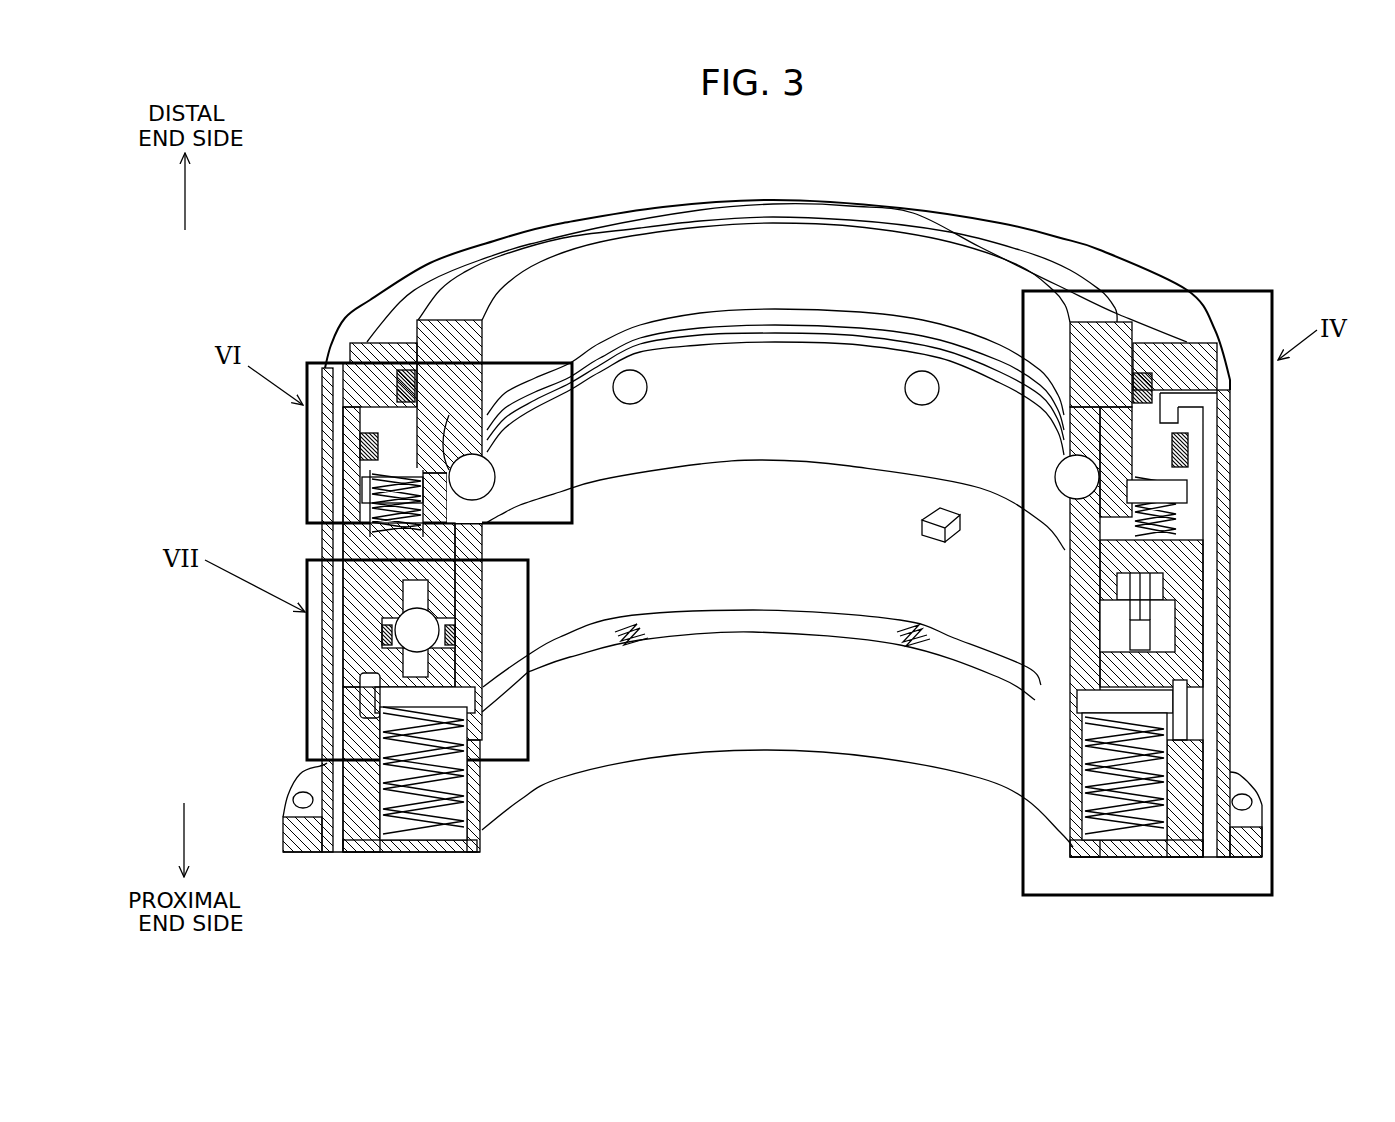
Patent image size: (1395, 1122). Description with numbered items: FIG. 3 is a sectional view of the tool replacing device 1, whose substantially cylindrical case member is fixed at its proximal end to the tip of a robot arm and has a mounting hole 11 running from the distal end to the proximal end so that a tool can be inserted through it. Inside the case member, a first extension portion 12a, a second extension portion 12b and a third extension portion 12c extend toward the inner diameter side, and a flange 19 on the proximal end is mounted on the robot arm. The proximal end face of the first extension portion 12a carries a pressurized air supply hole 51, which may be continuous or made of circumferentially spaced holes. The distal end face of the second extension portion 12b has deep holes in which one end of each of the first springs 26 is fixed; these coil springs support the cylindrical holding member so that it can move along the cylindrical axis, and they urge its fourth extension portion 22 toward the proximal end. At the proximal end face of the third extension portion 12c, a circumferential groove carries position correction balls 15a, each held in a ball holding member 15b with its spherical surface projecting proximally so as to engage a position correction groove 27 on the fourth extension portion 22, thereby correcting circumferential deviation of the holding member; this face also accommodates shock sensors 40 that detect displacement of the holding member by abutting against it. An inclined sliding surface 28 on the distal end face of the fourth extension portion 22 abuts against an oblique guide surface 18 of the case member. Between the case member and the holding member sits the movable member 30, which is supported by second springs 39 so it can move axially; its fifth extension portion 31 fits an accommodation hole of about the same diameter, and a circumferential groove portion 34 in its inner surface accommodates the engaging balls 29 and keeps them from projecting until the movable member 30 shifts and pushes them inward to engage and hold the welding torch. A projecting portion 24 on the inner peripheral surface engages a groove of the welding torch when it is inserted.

The tool replacing device 1 is at (367, 253).
The mounting hole 11 is at (670, 280).
The first extension portion 12a is at (1233, 291).
The second extension portion 12b is at (1070, 668).
The third extension portion 12c is at (1222, 580).
The position correction ball 15a is at (410, 615).
The ball holding member 15b is at (425, 622).
The guide surface 18 is at (366, 695).
The flange 19 is at (1237, 790).
The fourth extension portion 22 is at (1077, 682).
The projecting portion 24 is at (940, 505).
The first springs 26 is at (467, 780).
The position correction groove 27 is at (427, 690).
The sliding surface 28 is at (385, 668).
The engaging balls 29 is at (455, 440).
The movable member 30 is at (863, 278).
The fifth extension portion 31 is at (1175, 450).
The groove portion 34 is at (527, 410).
The second springs 39 is at (363, 497).
The shock sensors 40 is at (1143, 632).
The pressurized air supply hole 51 is at (330, 855).